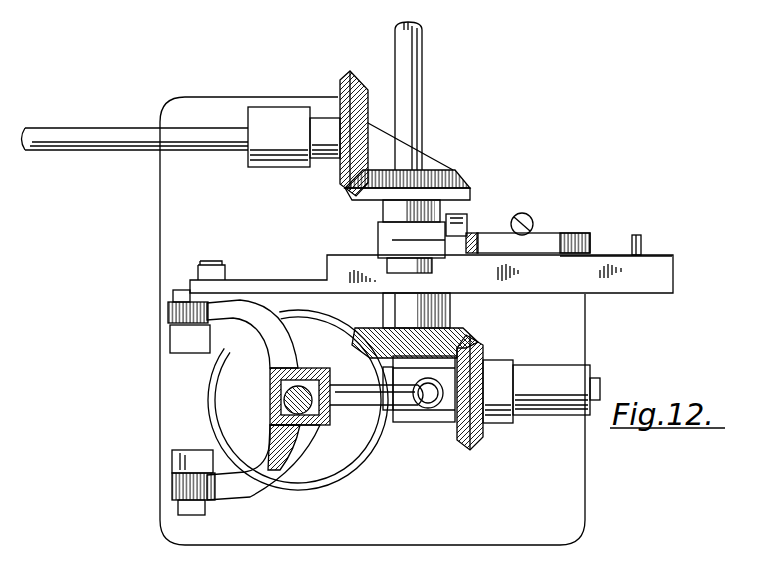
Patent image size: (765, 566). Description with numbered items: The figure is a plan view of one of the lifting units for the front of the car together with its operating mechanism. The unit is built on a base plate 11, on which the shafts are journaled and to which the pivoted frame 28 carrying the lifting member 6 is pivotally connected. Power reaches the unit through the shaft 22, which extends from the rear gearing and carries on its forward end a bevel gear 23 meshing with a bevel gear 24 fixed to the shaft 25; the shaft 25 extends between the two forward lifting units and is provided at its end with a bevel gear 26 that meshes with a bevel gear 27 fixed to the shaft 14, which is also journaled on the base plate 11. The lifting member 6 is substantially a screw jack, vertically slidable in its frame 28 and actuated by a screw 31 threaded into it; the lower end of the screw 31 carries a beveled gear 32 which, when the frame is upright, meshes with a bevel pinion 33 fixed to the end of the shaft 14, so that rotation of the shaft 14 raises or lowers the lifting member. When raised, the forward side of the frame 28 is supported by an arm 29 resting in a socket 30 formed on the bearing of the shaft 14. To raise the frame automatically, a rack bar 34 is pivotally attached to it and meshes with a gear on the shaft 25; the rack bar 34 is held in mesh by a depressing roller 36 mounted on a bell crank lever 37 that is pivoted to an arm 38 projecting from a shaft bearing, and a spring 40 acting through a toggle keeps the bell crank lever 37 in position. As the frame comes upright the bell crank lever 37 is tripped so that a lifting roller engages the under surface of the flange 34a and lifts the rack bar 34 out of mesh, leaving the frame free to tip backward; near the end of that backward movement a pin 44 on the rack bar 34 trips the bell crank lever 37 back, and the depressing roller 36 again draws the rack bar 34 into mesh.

The lifting member 6 is at (277, 412).
The base plate 11 is at (540, 488).
The shaft 14 is at (600, 386).
The shaft 22 is at (104, 137).
The bevel gear 23 is at (360, 80).
The bevel gear 24 is at (453, 170).
The shaft 25 is at (422, 83).
The bevel gear 26 is at (462, 332).
The bevel gear 27 is at (471, 442).
The pivoted frame 28 is at (265, 330).
The arm 29 is at (412, 398).
The socket 30 is at (433, 410).
The screw 31 is at (313, 424).
The beveled gear 32 is at (280, 396).
The bevel pinion 33 is at (385, 376).
The rack bar 34 is at (515, 292).
The flange of rack bar 34a is at (555, 262).
The depressing roller 36 is at (393, 264).
The bell crank lever 37 is at (478, 248).
The arm 38 is at (468, 220).
The spring 40 is at (587, 234).
The pin 44 is at (642, 238).